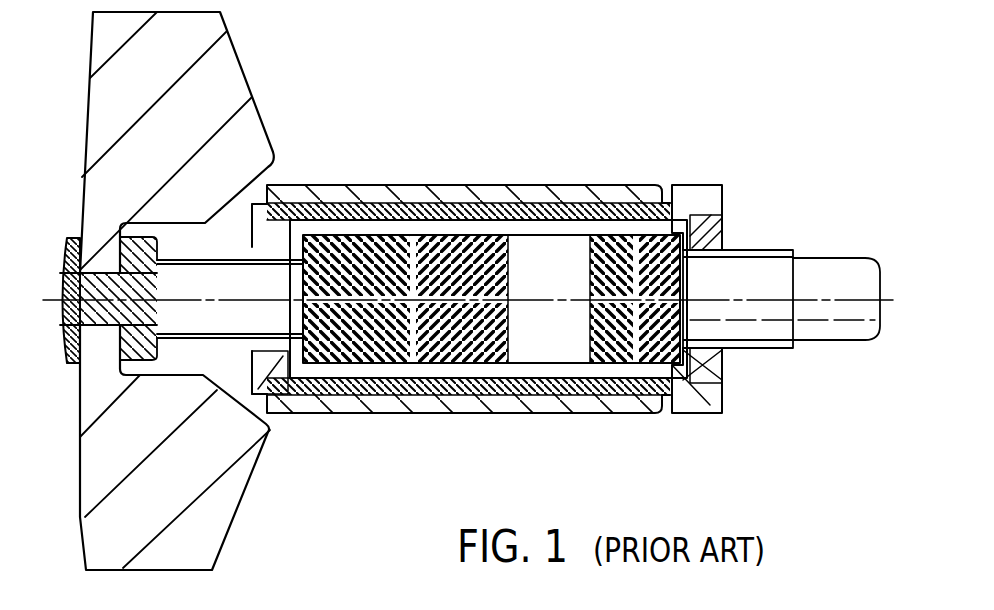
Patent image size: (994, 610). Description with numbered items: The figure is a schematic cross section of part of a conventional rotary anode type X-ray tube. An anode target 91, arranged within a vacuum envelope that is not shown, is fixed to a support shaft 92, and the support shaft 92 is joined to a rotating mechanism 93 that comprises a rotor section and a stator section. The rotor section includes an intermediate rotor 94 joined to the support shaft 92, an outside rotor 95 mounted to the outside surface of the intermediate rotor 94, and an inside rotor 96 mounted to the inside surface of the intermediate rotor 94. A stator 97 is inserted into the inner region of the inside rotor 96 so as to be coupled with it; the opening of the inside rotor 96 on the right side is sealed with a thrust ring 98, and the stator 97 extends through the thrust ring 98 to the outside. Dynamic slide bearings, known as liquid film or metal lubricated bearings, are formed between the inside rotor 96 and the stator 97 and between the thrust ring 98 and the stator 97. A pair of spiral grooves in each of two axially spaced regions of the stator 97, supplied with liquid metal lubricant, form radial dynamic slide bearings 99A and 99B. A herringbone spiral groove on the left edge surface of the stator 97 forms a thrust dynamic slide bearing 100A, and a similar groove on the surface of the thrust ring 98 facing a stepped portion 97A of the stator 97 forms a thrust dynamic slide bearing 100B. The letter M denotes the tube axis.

The anode target 91 is at (212, 31).
The support shaft 92 is at (73, 313).
The rotating mechanism 93 is at (338, 170).
The intermediate rotor 94 is at (385, 205).
The outside rotor 95 is at (472, 185).
The inside rotor 96 is at (530, 198).
The stator 97 is at (547, 353).
The stepped portion 97A is at (728, 224).
The thrust ring 98 is at (730, 224).
The radial dynamic slide bearing 99A is at (384, 393).
The radial dynamic slide bearing 99B is at (613, 403).
The thrust dynamic slide bearing 100A is at (263, 405).
The thrust dynamic slide bearing 100B is at (722, 375).
The tube axis M is at (849, 297).